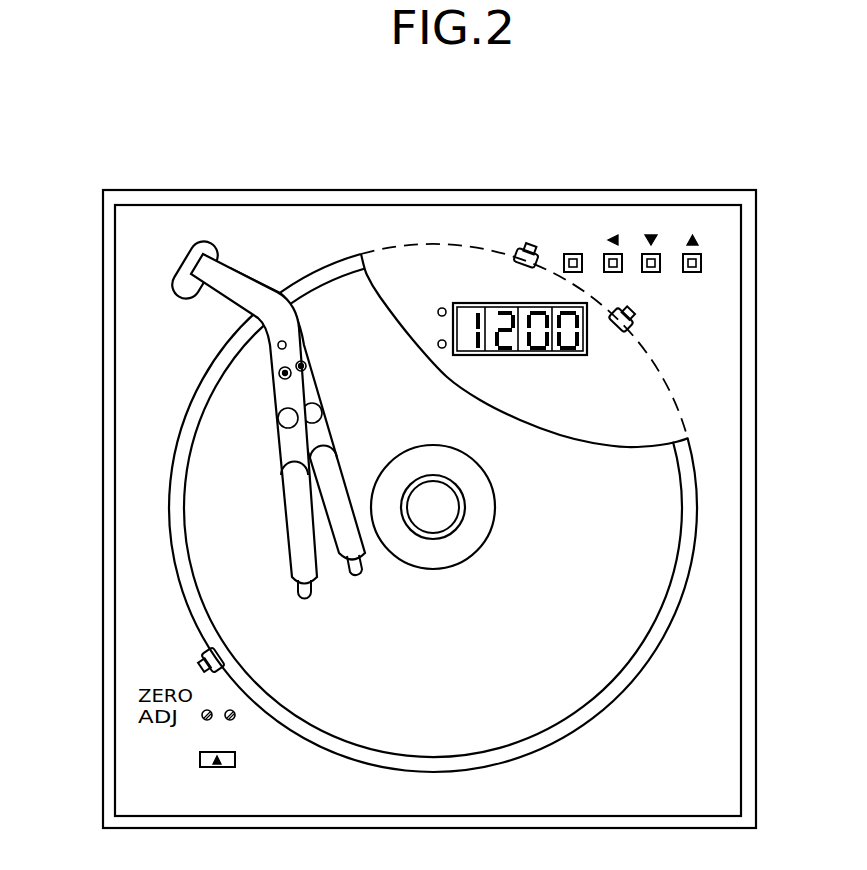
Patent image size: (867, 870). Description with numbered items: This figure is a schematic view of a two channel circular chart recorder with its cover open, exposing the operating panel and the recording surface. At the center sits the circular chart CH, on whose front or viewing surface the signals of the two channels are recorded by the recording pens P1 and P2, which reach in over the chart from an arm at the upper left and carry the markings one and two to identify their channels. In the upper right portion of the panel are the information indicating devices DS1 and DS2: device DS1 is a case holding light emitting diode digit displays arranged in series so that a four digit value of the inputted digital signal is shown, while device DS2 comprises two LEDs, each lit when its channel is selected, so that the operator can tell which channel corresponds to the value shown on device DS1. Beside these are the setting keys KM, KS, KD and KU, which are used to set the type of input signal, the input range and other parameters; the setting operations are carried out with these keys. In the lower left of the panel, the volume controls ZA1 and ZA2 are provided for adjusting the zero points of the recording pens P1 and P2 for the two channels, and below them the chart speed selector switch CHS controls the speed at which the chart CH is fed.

The circular chart CH is at (327, 300).
The information indicating device DS1 is at (498, 303).
The information indicating device DS2 is at (422, 298).
The setting key KM is at (571, 231).
The setting key KS is at (618, 234).
The setting key KD is at (656, 234).
The setting key KU is at (694, 234).
The recording pen P1 is at (282, 457).
The recording pen P2 is at (335, 498).
The volume control ZA1 is at (200, 682).
The volume control ZA2 is at (231, 721).
The chart speed selector switch CHS is at (220, 768).